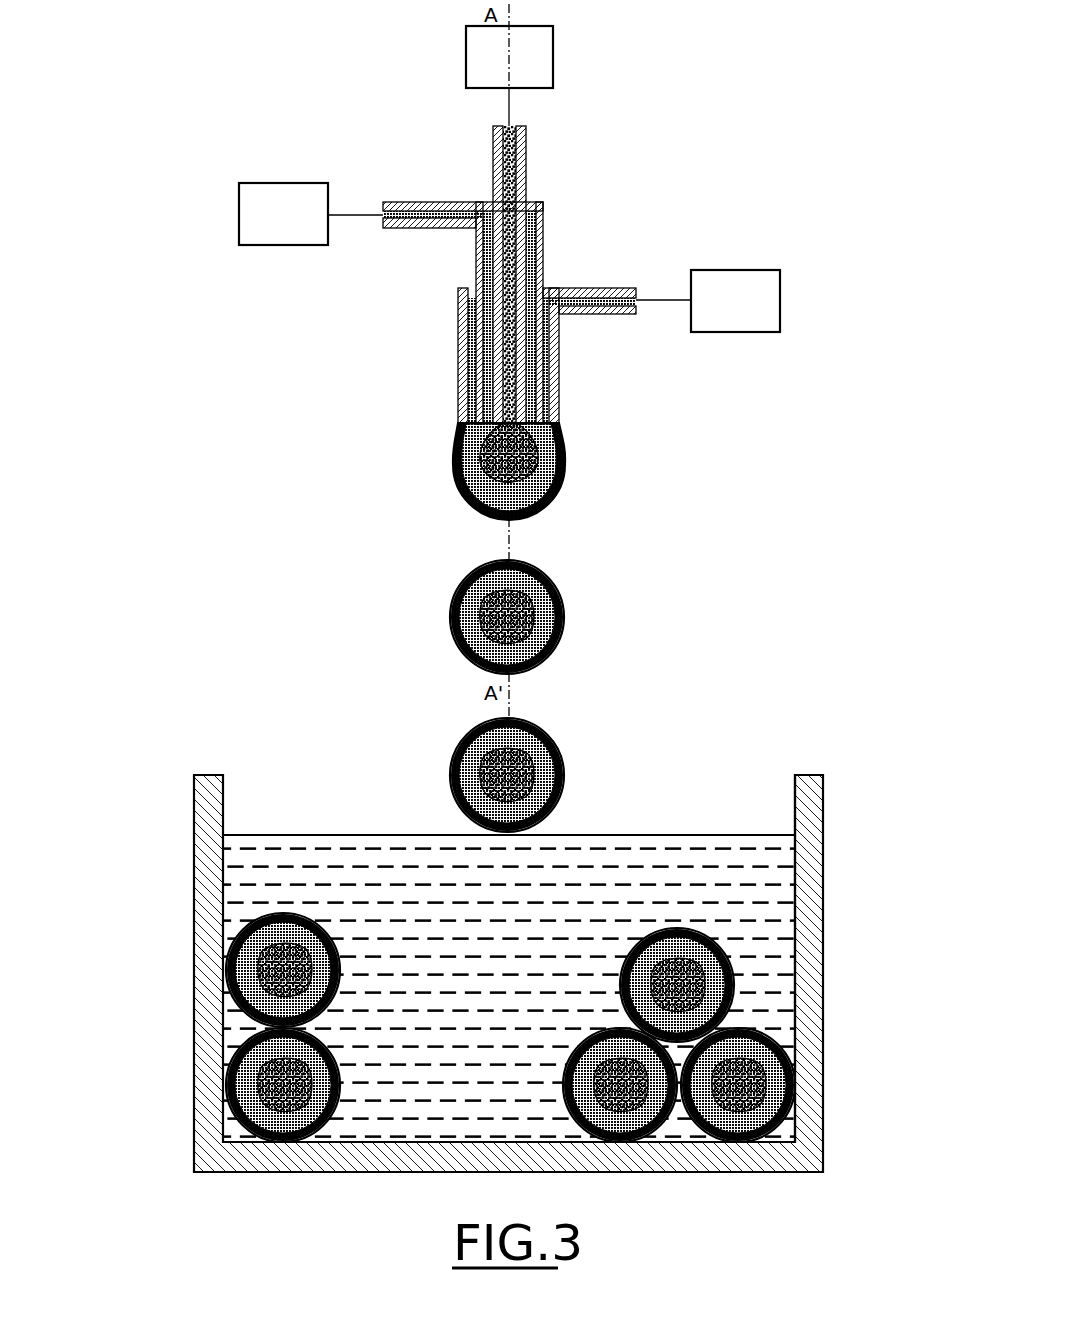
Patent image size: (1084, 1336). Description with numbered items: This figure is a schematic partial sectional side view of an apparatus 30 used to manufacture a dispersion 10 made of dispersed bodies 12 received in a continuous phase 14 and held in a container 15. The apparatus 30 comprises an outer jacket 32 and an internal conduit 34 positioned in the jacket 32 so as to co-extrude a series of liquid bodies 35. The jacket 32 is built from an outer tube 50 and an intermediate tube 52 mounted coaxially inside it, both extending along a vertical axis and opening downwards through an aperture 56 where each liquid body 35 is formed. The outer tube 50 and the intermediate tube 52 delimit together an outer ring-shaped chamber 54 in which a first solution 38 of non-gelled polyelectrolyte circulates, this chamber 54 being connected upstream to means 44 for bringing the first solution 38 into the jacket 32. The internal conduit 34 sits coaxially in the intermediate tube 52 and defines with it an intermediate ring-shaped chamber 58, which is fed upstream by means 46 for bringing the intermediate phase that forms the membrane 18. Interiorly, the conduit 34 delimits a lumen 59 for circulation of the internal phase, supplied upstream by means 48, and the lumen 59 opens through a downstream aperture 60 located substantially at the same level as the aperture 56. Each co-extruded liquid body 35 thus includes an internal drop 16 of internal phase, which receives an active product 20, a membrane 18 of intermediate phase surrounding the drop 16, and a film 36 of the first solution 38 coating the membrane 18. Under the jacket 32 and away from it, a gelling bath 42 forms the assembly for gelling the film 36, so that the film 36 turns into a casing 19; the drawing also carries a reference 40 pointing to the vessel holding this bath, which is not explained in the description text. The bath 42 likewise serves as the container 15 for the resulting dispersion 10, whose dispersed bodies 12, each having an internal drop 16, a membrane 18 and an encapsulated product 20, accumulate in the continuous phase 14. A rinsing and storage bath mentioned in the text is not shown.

The dispersion 10 is at (283, 818).
The dispersed body 12 is at (310, 902).
The continuous phase 14 is at (525, 945).
The container 15 is at (808, 828).
The internal drop 16 is at (452, 608).
The liquid encapsulation membrane 18 is at (462, 648).
The casing 19 is at (340, 960).
The active product 20 is at (552, 626).
The apparatus 30 is at (668, 112).
The outer jacket 32 is at (447, 390).
The internal conduit 34 is at (510, 275).
The liquid body 35 is at (572, 609).
The film 36 is at (566, 470).
The first solution 38 is at (493, 548).
The container 40 is at (172, 820).
The gelling bath 42 is at (700, 826).
The means for bringing the first solution 44 is at (738, 276).
The means for bringing the intermediate phase 46 is at (283, 188).
The means for bringing the internal phase 48 is at (478, 58).
The outer tube 50 is at (547, 356).
The intermediate tube 52 is at (540, 398).
The outer ring-shaped chamber 54 is at (550, 343).
The aperture 56 is at (455, 443).
The intermediate ring-shaped chamber 58 is at (542, 243).
The lumen 59 is at (503, 172).
The downstream aperture 60 is at (463, 478).